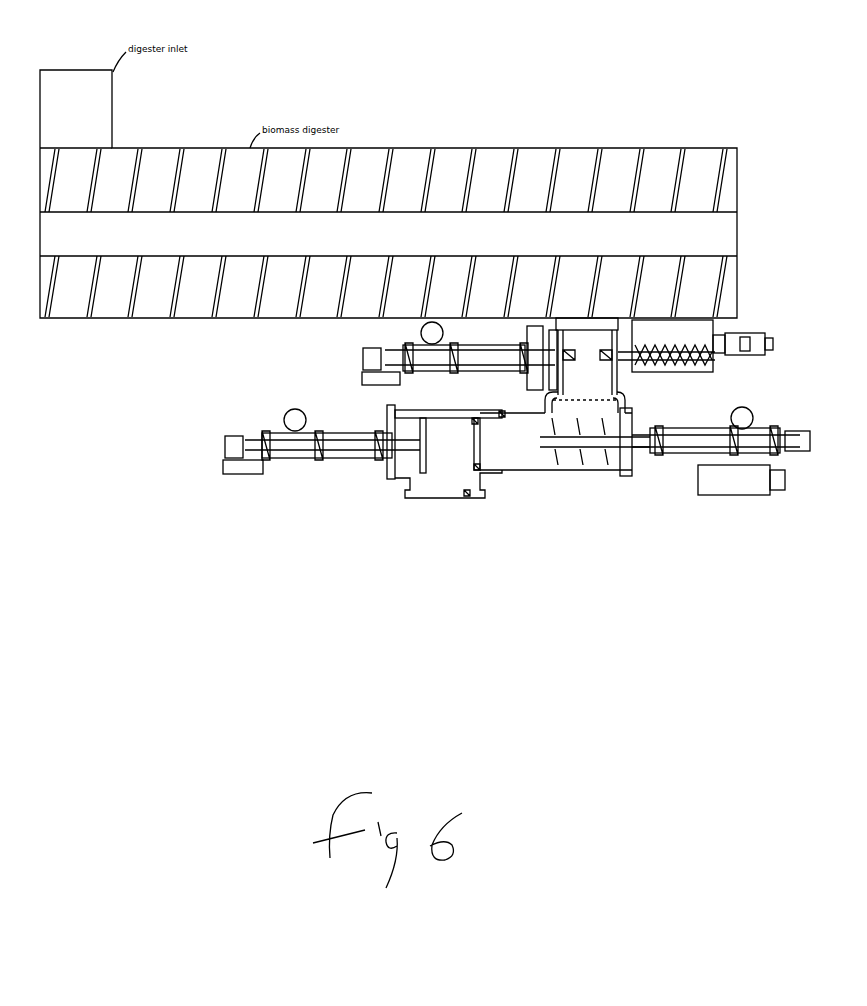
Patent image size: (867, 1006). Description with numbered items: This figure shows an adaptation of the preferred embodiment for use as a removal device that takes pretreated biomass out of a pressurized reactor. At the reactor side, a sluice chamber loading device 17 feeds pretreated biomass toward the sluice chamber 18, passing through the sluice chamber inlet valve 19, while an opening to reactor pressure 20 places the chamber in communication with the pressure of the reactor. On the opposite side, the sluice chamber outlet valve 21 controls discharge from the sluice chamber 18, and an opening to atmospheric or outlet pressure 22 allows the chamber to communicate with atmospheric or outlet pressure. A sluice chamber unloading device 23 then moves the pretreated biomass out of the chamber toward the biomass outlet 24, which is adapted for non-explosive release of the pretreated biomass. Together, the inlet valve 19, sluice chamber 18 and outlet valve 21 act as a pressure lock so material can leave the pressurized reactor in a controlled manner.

The sluice chamber loading device 17 is at (683, 358).
The sluice chamber 18 is at (580, 395).
The sluice chamber inlet valve 19 is at (553, 345).
The opening to reactor pressure 20 is at (632, 357).
The sluice chamber outlet valve 21 is at (418, 452).
The opening to atmospheric or outlet pressure 22 is at (477, 466).
The sluice chamber unloading device 23 is at (615, 398).
The biomass outlet adapted for non-explosive release of pretreated biomass 24 is at (467, 493).